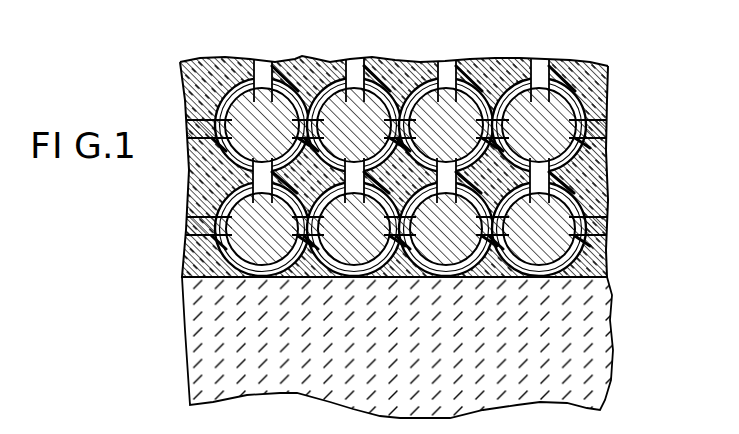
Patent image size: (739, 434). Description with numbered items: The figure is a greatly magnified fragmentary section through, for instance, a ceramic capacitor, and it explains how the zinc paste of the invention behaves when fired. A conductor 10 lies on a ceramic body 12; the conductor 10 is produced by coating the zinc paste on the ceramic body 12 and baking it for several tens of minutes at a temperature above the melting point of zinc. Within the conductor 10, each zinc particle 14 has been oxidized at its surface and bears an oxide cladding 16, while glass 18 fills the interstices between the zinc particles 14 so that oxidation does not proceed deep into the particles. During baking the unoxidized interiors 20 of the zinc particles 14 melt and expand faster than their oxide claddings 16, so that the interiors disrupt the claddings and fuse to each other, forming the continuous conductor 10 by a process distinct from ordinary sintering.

The conductor 10 is at (414, 145).
The ceramic body 12 is at (605, 305).
The zinc particle 14 is at (600, 176).
The oxide cladding 16 is at (605, 208).
The glass 18 is at (302, 57).
The unoxidized interiors 20 is at (607, 254).